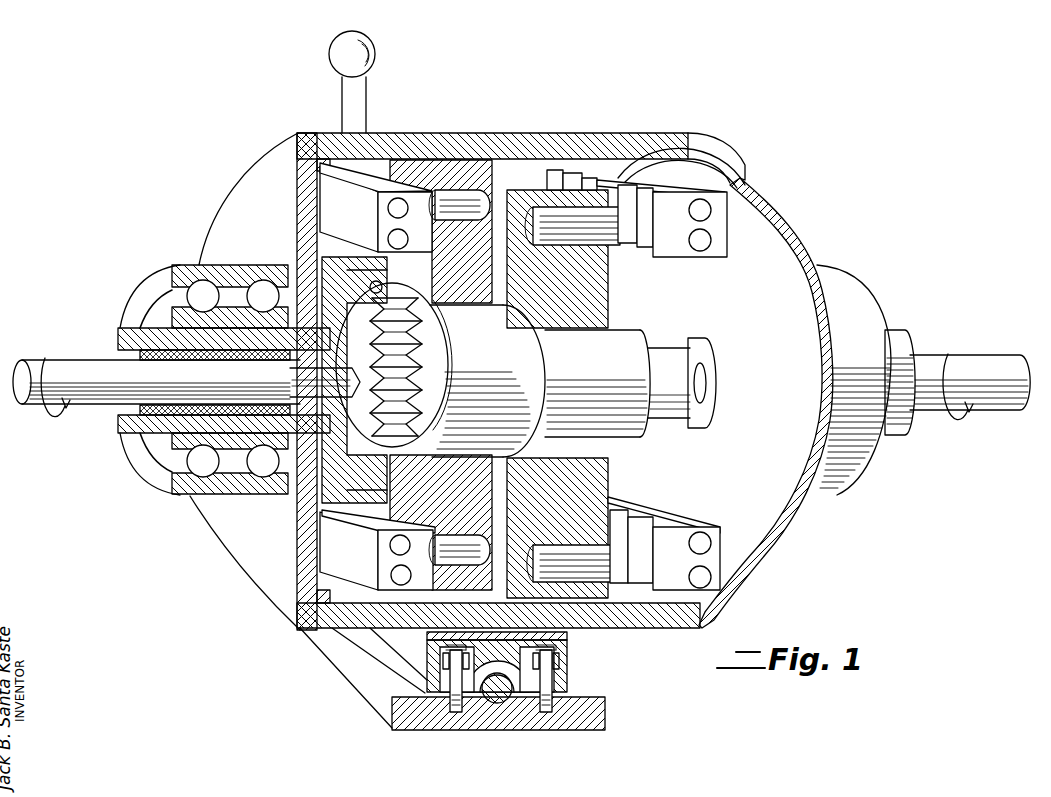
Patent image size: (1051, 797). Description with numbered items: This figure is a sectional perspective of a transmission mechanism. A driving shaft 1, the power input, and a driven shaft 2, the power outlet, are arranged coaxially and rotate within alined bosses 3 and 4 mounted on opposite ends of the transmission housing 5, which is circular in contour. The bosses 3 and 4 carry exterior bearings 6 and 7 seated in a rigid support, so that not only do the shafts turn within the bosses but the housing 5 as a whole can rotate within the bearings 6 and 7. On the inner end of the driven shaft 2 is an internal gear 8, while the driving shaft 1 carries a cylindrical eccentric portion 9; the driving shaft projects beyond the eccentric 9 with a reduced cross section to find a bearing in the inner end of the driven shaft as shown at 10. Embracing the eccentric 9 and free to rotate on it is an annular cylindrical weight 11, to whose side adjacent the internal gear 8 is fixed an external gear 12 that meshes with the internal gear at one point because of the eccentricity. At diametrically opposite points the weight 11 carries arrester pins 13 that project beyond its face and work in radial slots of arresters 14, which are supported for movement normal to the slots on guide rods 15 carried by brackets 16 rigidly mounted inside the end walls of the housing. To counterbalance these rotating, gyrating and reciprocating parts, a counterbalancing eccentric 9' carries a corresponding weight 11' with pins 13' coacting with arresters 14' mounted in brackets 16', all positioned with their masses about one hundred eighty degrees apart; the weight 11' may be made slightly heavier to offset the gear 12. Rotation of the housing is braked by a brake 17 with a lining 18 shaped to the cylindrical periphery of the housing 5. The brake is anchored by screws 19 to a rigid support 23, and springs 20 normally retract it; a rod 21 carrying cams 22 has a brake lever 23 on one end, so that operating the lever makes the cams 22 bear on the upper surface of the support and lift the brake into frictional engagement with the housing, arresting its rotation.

The driving shaft 1 is at (978, 408).
The driven shaft 2 is at (95, 402).
The boss 3 is at (893, 332).
The boss 4 is at (112, 338).
The transmission housing 5 is at (683, 131).
The bearing 6 is at (838, 275).
The bearing 7 is at (186, 262).
The internal gear 8 is at (320, 505).
The eccentric portion 9 is at (440, 370).
The counterbalancing eccentric 9' is at (630, 383).
The bearing of the driving shaft in the driven shaft 10 is at (276, 374).
The cylindrical weight 11 is at (441, 339).
The counterbalancing weight 11' is at (580, 394).
The external gear 12 is at (425, 337).
The arrester pins 13 is at (459, 384).
The arrester pins 13' is at (603, 434).
The arresters 14 is at (377, 322).
The arresters 14' is at (636, 311).
The guide rods 15 is at (392, 209).
The brackets 16 is at (323, 378).
The brackets 16' is at (688, 387).
The brake 17 is at (568, 670).
The brake lining 18 is at (572, 636).
The screws 19 is at (455, 714).
The springs 20 is at (444, 661).
The rod 21 is at (506, 700).
The cams 22 is at (492, 702).
The brake lever / rigid support 23 is at (370, 48).